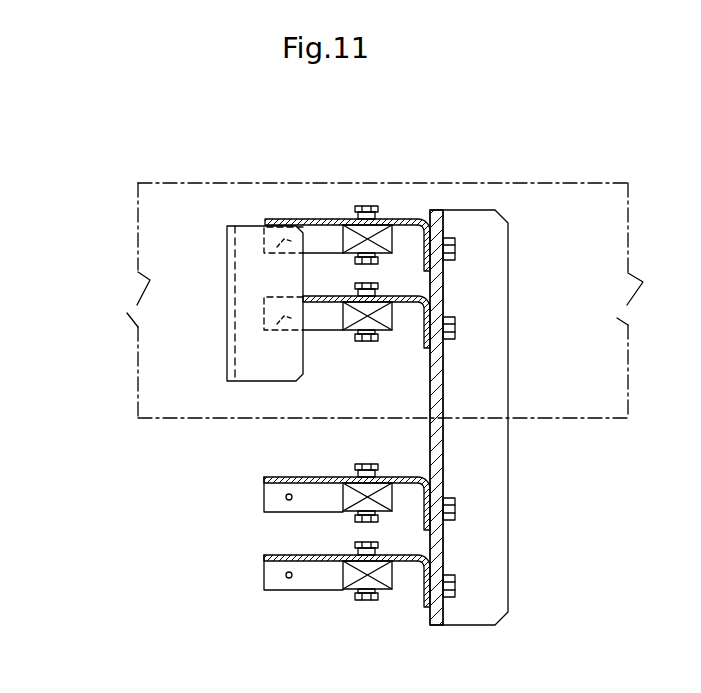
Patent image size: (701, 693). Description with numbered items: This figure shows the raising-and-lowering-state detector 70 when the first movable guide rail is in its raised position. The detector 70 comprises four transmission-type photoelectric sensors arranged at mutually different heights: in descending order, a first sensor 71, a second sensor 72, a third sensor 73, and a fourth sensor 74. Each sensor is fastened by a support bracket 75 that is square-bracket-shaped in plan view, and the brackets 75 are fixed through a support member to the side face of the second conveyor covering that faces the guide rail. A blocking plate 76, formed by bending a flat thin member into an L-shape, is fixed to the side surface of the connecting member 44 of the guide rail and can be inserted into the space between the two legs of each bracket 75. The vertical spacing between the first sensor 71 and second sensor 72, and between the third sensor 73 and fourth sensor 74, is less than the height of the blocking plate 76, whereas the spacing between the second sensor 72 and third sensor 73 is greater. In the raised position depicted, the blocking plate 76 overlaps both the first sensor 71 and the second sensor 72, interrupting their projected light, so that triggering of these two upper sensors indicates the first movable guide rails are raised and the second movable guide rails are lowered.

The raising-and-lowering-state detector 70 is at (195, 158).
The connecting member 44 is at (138, 258).
The support bracket 75 is at (340, 312).
The blocking plate 76 is at (293, 353).
The first sensor 71 is at (280, 258).
The second sensor 72 is at (280, 332).
The third sensor 73 is at (287, 500).
The fourth sensor 74 is at (287, 578).